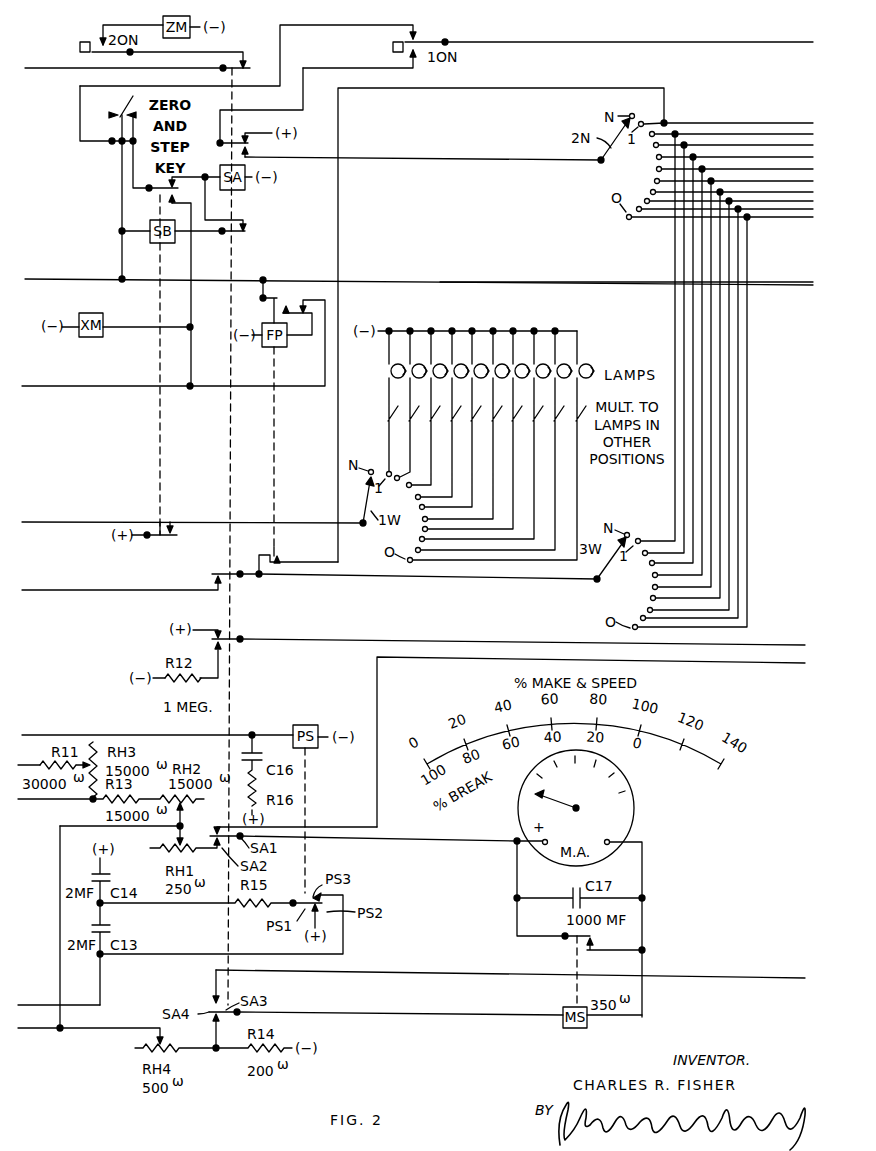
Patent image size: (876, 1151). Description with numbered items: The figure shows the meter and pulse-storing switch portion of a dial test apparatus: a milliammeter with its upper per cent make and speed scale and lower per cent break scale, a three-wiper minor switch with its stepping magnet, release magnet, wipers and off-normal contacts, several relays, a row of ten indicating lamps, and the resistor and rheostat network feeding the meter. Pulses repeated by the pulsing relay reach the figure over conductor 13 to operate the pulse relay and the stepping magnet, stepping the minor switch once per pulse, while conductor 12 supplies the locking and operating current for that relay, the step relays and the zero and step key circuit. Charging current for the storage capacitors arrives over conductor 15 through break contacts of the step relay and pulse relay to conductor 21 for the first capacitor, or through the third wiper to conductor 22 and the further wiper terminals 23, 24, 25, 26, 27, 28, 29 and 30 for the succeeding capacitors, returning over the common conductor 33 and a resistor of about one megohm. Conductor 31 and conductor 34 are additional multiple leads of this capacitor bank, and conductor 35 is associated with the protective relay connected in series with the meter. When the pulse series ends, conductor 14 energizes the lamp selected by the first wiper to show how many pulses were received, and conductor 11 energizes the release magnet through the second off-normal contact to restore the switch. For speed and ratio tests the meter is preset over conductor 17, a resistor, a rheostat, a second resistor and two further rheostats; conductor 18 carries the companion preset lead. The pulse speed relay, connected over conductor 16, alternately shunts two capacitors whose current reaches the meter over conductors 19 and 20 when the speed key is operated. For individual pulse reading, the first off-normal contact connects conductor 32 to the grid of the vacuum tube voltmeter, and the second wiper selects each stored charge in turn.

The conductor 11 is at (30, 68).
The conductor 12 is at (30, 279).
The conductor 13 is at (28, 386).
The conductor 14 is at (28, 522).
The conductor 15 is at (28, 590).
The conductor 16 is at (28, 735).
The conductor 17 is at (22, 765).
The conductor line 18 is at (24, 802).
The conductor 19 is at (22, 1005).
The conductor 20 is at (18, 1031).
The conductor 21 is at (776, 124).
The conductor 22 is at (780, 136).
The conductor 23 is at (748, 147).
The conductor 24 is at (786, 160).
The conductor 25 is at (763, 174).
The conductor 26 is at (752, 182).
The conductor 27 is at (732, 193).
The conductor 28 is at (647, 217).
The conductor 29 is at (668, 209).
The conductor 30 is at (782, 217).
The conductor line 31 is at (775, 287).
The conductor 32 is at (773, 44).
The conductor 33 is at (773, 646).
The conductor line 34 is at (765, 665).
The conductor line 35 is at (763, 979).